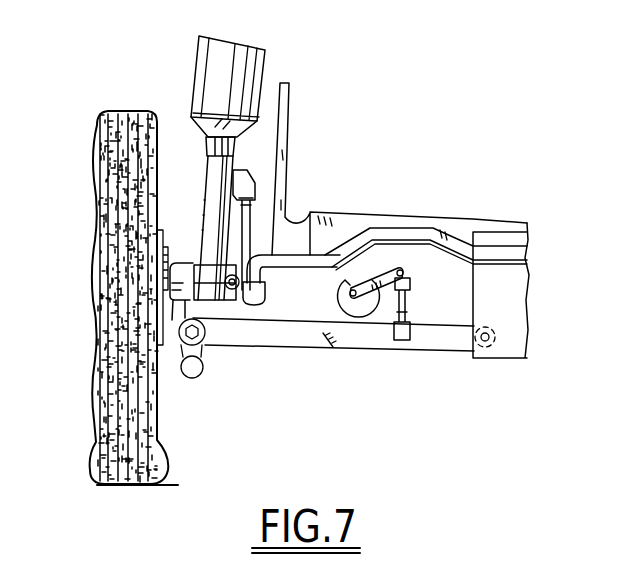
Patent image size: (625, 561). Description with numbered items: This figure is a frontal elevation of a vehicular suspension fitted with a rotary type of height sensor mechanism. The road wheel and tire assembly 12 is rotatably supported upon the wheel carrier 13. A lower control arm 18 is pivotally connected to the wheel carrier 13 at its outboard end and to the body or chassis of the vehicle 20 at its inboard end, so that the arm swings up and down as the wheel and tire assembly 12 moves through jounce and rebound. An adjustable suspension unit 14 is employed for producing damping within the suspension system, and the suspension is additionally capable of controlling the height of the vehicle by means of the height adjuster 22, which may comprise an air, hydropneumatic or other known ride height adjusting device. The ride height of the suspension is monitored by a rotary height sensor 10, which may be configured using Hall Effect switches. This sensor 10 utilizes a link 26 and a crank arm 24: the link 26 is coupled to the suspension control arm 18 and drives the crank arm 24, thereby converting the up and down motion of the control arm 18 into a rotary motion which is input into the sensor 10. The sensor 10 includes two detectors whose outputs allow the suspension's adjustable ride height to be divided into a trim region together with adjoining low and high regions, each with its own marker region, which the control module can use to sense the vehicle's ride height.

The rotary height sensor 10 is at (326, 360).
The road wheel and tire assembly 12 is at (92, 182).
The wheel carrier 13 is at (173, 293).
The adjustable suspension unit 14 is at (199, 168).
The lower control arm 18 is at (280, 352).
The body or chassis of the vehicle 20 is at (443, 213).
The height adjuster 22 is at (263, 63).
The crank arm 24 is at (349, 292).
The link 26 is at (407, 313).